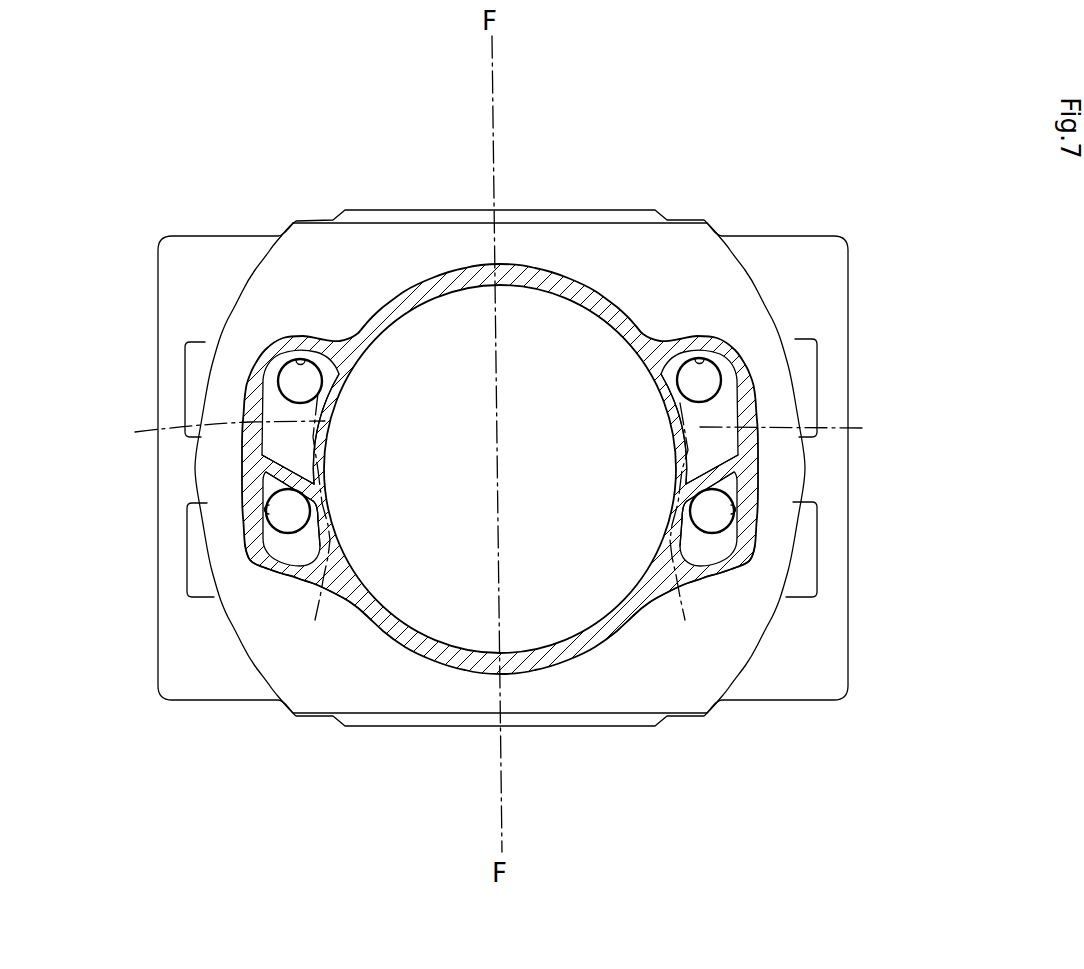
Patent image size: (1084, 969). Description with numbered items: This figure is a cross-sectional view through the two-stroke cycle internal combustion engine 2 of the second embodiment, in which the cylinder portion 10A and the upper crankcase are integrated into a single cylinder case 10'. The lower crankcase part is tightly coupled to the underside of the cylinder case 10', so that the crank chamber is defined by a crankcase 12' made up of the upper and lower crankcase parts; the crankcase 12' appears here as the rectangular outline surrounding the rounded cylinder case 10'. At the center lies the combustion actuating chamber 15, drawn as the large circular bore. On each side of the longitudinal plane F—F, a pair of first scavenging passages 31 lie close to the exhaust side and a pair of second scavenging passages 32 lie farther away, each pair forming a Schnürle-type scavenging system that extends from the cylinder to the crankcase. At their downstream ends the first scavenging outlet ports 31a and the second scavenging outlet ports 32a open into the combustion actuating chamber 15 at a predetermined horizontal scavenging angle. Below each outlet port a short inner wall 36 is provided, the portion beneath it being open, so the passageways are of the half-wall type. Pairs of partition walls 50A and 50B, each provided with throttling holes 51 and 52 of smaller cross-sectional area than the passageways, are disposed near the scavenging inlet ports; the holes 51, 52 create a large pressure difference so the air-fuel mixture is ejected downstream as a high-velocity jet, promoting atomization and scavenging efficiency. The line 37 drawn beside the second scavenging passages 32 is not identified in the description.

The two-stroke cycle internal combustion engine 2 is at (271, 145).
The cylinder case 10' is at (500, 422).
The cylinder portion 10A is at (583, 286).
The crankcase 12' is at (503, 428).
The combustion actuating chamber 15 is at (516, 320).
The first scavenging passages 31 is at (270, 403).
The first scavenging outlet ports 31a is at (330, 406).
The second scavenging passages 32 is at (262, 548).
The second scavenging outlet ports 32a is at (330, 527).
The short inner wall 36 is at (501, 430).
The reference line 37 is at (497, 524).
The partition wall 50A is at (242, 454).
The partition wall 50B is at (262, 562).
The throttling holes 51 is at (300, 360).
The throttling holes 52 is at (268, 496).